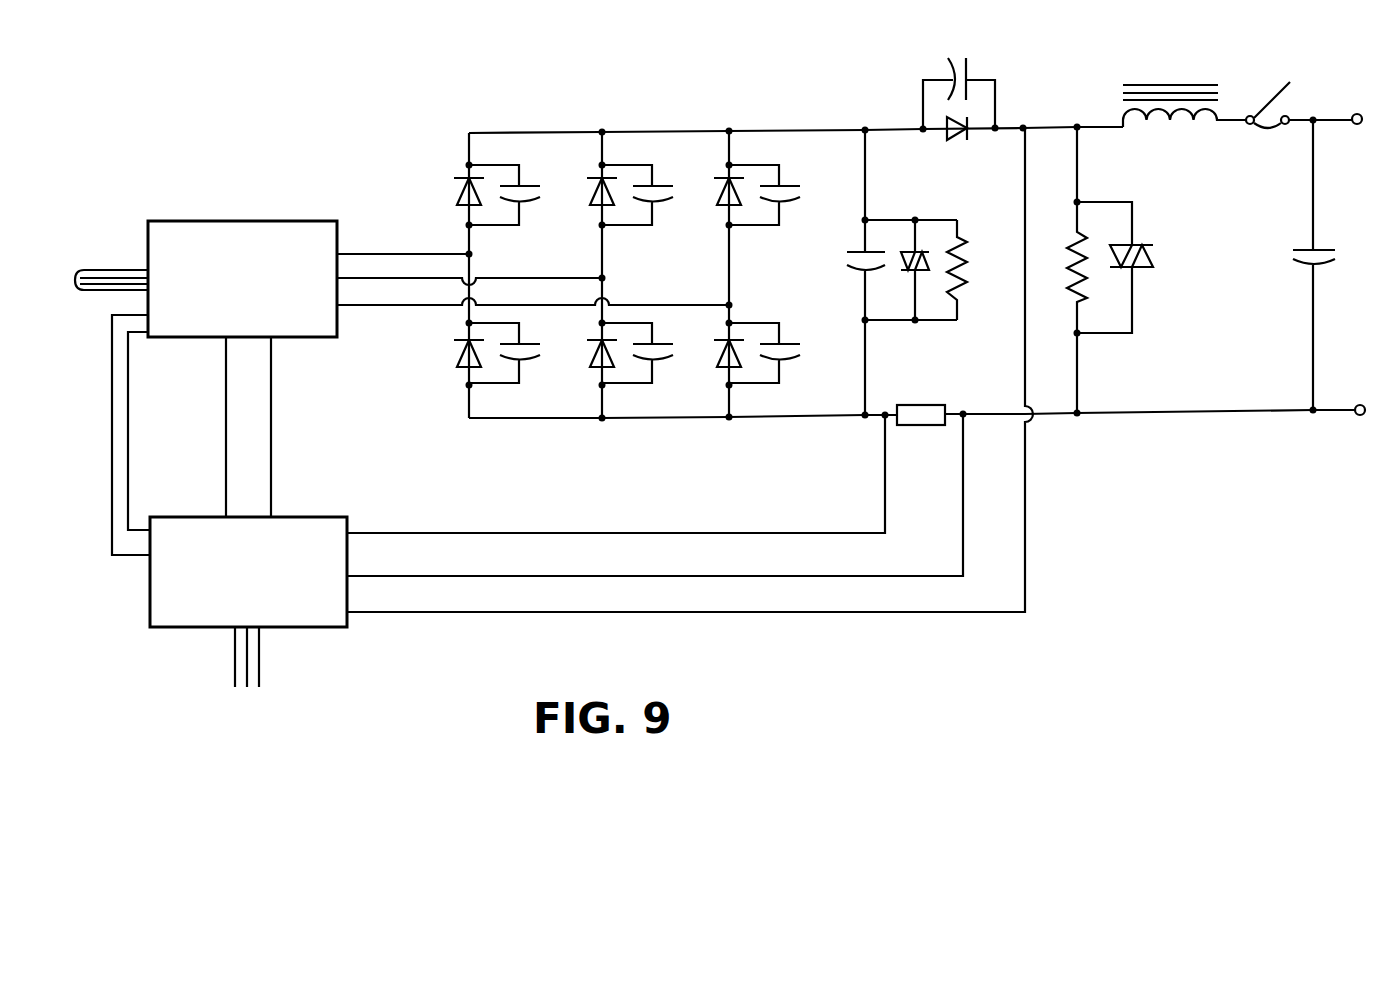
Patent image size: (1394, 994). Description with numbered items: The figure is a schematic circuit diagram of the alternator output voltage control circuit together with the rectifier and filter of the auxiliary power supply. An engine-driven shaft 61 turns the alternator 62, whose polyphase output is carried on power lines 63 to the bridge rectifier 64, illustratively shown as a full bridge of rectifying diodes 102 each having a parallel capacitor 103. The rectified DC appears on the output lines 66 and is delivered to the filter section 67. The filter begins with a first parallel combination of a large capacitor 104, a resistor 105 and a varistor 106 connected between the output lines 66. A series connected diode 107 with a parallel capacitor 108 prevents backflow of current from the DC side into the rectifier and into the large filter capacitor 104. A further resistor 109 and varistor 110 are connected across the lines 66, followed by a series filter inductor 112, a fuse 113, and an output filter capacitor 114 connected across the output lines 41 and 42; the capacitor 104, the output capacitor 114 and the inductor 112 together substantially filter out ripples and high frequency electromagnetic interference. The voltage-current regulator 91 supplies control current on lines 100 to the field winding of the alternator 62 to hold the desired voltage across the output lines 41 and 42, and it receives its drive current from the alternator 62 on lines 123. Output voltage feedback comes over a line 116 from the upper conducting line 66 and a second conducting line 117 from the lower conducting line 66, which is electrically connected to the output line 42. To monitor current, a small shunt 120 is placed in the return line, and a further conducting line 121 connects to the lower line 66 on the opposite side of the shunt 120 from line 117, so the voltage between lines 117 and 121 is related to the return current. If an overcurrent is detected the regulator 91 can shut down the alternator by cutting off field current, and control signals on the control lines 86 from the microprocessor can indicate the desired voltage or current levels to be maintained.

The output line 41 is at (1342, 123).
The output line 42 is at (1335, 408).
The shaft 61 is at (123, 268).
The alternator 62 is at (210, 220).
The power lines 63 is at (397, 305).
The bridge rectifier 64 is at (640, 121).
The output lines 66 is at (787, 130).
The filter 67 is at (1189, 424).
The control lines 86 is at (259, 672).
The voltage-current regulator 91 is at (150, 613).
The lines 100 is at (271, 443).
The rectifying diodes 102 is at (461, 190).
The parallel capacitors 103 is at (525, 182).
The capacitor 104 is at (857, 253).
The resistor 105 is at (981, 270).
The varistor 106 is at (923, 254).
The diode 107 is at (955, 135).
The capacitor 108 is at (968, 65).
The resistor 109 is at (1057, 272).
The varistor 110 is at (1140, 248).
The filter inductor 112 is at (1167, 113).
The fuse 113 is at (1299, 93).
The output filter capacitor 114 is at (1305, 248).
The line 116 is at (1027, 520).
The conducting line 117 is at (962, 535).
The shunt 120 is at (915, 405).
The conducting line 121 is at (655, 531).
The lines 123 is at (128, 445).